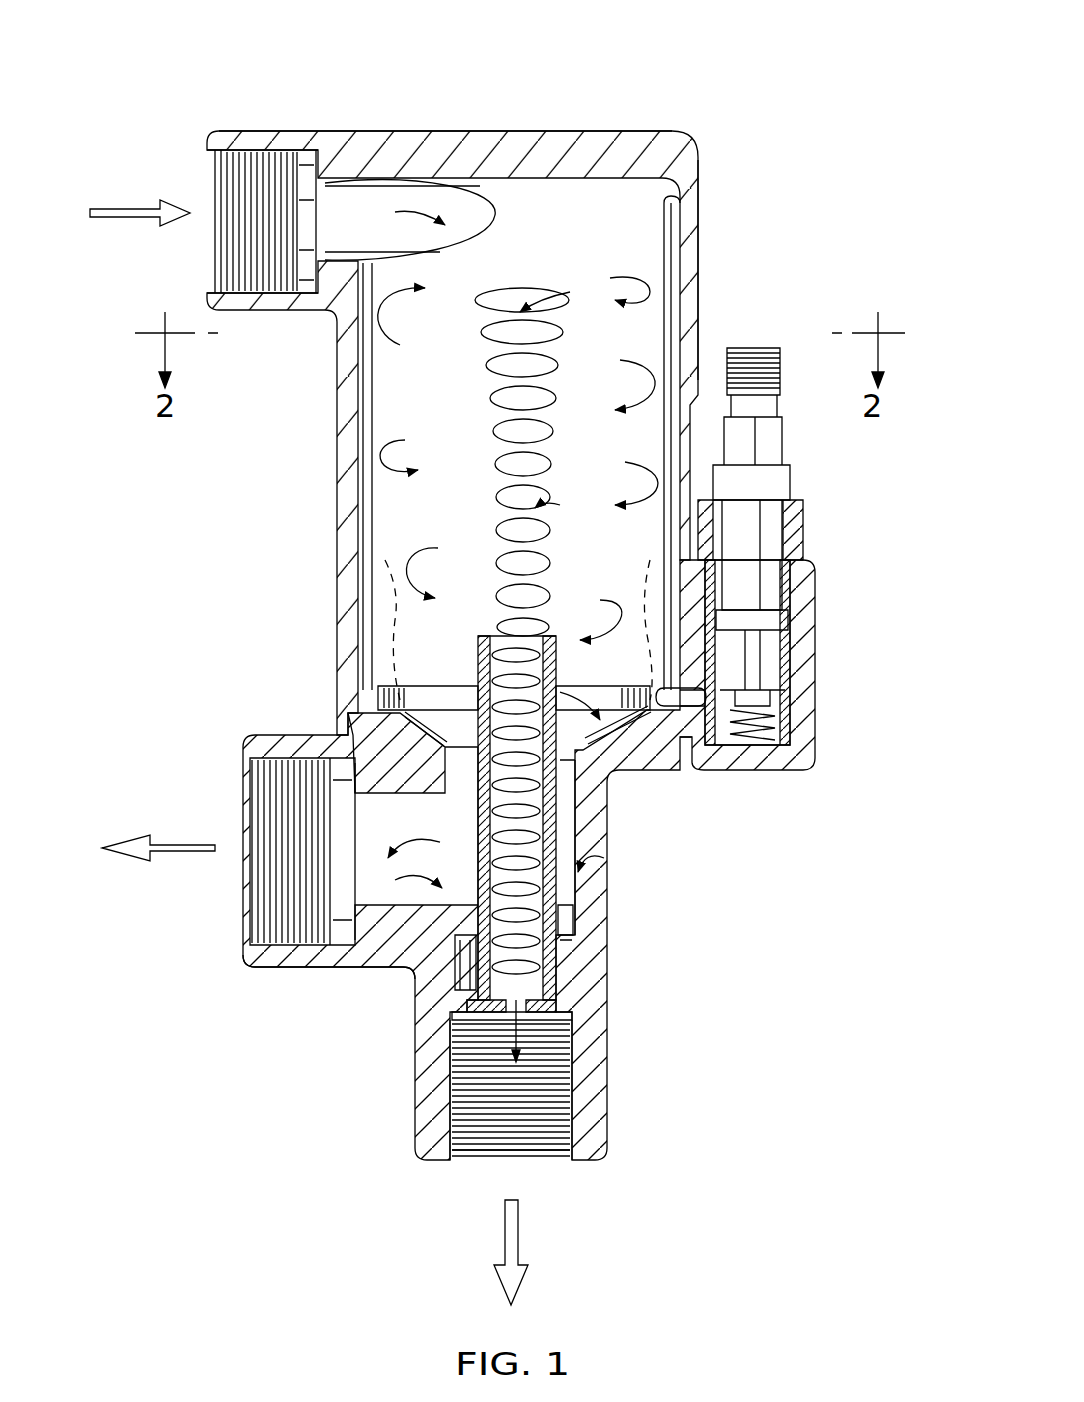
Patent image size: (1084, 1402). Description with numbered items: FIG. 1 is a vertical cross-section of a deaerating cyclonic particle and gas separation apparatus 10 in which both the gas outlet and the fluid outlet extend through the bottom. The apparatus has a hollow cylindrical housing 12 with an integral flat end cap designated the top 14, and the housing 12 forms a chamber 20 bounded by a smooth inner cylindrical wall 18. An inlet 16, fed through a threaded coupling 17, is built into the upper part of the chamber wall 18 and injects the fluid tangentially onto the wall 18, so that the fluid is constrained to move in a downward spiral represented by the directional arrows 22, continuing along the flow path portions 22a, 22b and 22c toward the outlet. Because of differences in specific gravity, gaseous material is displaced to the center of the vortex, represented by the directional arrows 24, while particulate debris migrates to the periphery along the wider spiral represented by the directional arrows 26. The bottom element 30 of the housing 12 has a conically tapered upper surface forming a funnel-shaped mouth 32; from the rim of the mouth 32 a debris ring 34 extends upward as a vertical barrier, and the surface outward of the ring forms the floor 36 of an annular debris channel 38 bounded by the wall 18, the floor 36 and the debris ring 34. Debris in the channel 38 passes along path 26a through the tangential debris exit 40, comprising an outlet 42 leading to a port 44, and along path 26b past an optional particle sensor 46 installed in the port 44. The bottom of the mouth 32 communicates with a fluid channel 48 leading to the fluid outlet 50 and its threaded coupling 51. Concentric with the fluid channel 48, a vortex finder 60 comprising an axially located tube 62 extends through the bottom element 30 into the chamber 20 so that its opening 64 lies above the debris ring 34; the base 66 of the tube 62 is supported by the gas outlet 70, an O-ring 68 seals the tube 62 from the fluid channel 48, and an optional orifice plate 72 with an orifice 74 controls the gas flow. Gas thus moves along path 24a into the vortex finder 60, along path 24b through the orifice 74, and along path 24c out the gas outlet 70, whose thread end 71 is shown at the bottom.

The particle and gas separation apparatus 10 is at (752, 92).
The housing 12 is at (703, 283).
The top 14 is at (445, 130).
The inlet 16 is at (215, 180).
The coupling 17 is at (250, 266).
The inner cylindrical wall 18 is at (690, 222).
The chamber 20 is at (592, 210).
The directional arrows 22 is at (400, 214).
The flow path 22a is at (605, 677).
The flow path 22b is at (412, 848).
The flow path 22c is at (420, 878).
The directional arrows 24 is at (525, 290).
The path 24a is at (596, 820).
The path 24b is at (560, 1003).
The path 24c is at (560, 1045).
The directional arrows 26 is at (370, 605).
The path 26a is at (675, 764).
The path 26b is at (785, 714).
The bottom element 30 is at (607, 1125).
The mouth 32 is at (413, 710).
The debris ring 34 is at (375, 698).
The floor 36 is at (378, 708).
The debris channel 38 is at (370, 680).
The exit 40 is at (725, 773).
The outlet 42 is at (687, 772).
The port 44 is at (775, 692).
The particle sensor 46 is at (790, 462).
The fluid channel 48 is at (606, 882).
The fluid outlet 50 is at (243, 898).
The coupling 51 is at (262, 928).
The vortex finder 60 is at (360, 966).
The tube 62 is at (485, 645).
The opening 64 is at (500, 616).
The base 66 is at (575, 1018).
The O-ring 68 is at (595, 908).
The gas outlet 70 is at (480, 1165).
The thread end 71 is at (548, 1162).
The gas outlet orifice plate 72 is at (440, 1040).
The orifice 74 is at (468, 1000).